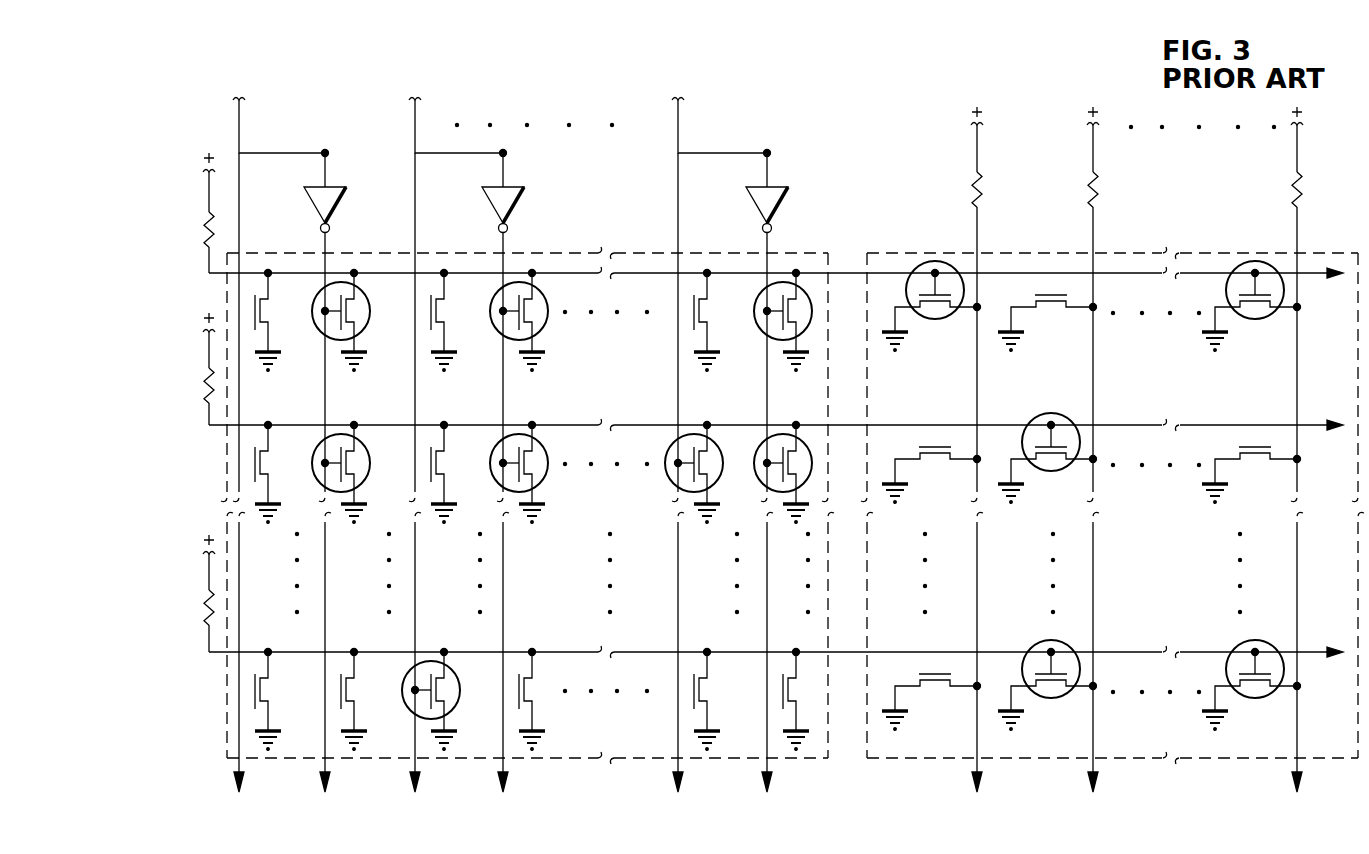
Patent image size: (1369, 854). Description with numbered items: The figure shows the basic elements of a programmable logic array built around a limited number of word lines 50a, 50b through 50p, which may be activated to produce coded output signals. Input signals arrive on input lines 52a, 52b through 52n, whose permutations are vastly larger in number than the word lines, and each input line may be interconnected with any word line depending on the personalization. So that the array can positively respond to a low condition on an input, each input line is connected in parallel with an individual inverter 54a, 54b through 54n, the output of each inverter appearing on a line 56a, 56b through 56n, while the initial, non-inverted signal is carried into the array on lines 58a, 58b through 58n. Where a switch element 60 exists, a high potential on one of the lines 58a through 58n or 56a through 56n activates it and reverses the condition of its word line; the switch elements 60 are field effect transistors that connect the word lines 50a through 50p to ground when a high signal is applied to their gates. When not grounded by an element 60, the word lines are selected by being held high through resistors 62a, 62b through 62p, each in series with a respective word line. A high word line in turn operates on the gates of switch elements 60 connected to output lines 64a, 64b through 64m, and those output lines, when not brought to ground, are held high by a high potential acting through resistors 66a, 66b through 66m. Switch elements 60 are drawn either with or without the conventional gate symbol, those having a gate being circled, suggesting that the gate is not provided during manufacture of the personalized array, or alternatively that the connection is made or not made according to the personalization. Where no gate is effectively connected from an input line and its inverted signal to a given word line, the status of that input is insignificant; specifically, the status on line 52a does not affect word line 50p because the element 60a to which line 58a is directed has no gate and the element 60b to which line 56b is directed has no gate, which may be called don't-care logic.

The word line 50a is at (285, 272).
The word line 50b is at (287, 427).
The word line 50p is at (292, 650).
The input line 52a is at (240, 128).
The input line 52b is at (417, 118).
The input line 52n is at (680, 126).
The inverter 54a is at (337, 208).
The inverter 54b is at (525, 210).
The inverter 54n is at (786, 210).
The inverter output line 56a is at (327, 238).
The inverter output line 56b is at (505, 241).
The inverter output line 56n is at (769, 238).
The initial signal line 58a is at (240, 190).
The initial signal line 58b is at (417, 193).
The initial signal line 58n is at (680, 192).
The switch element 60 is at (364, 455).
The switch element 60a is at (262, 695).
The switch element 60b is at (348, 697).
The resistor 62a is at (204, 247).
The resistor 62b is at (204, 403).
The resistor 62p is at (204, 625).
The output line 64a is at (977, 717).
The output line 64b is at (1093, 729).
The output line 64m is at (1297, 725).
The resistor 66a is at (984, 189).
The resistor 66b is at (1101, 189).
The resistor 66m is at (1300, 189).